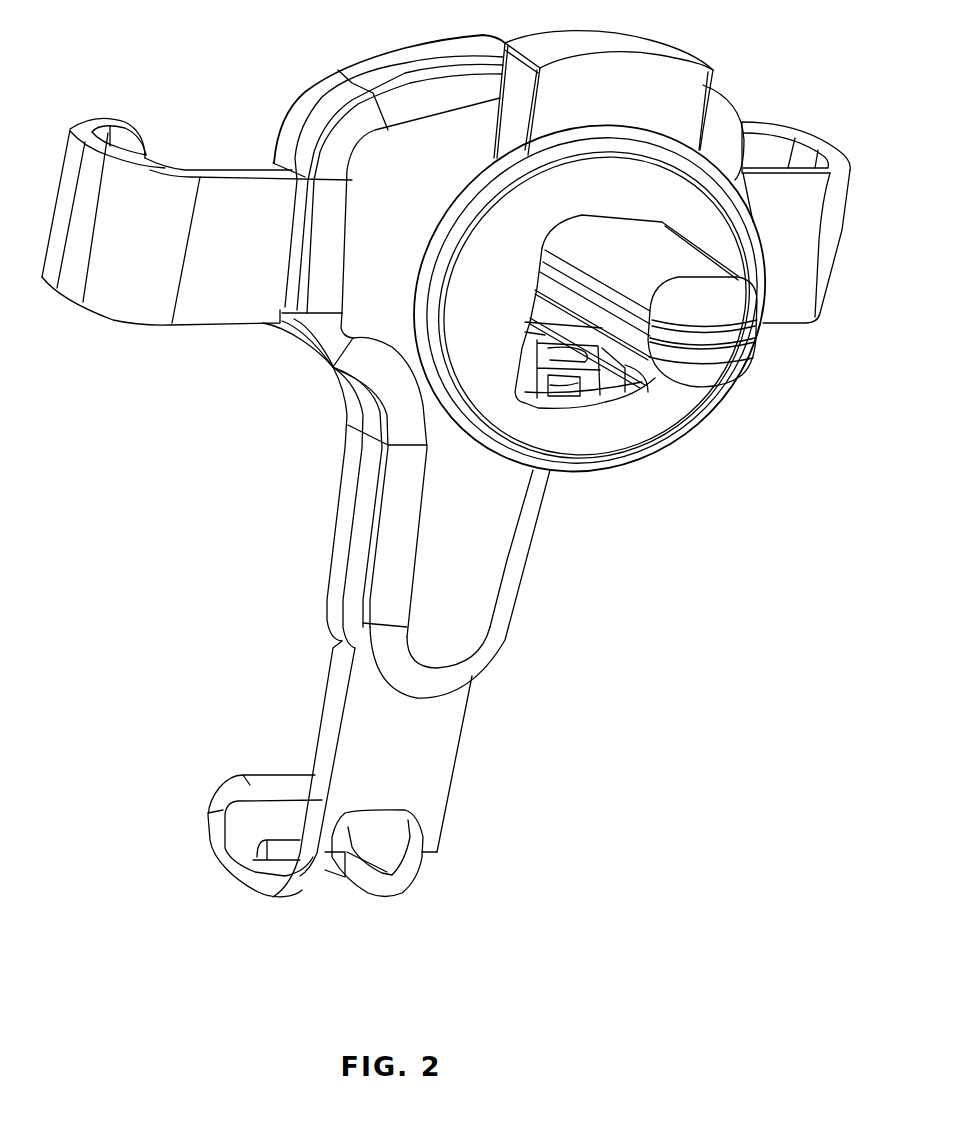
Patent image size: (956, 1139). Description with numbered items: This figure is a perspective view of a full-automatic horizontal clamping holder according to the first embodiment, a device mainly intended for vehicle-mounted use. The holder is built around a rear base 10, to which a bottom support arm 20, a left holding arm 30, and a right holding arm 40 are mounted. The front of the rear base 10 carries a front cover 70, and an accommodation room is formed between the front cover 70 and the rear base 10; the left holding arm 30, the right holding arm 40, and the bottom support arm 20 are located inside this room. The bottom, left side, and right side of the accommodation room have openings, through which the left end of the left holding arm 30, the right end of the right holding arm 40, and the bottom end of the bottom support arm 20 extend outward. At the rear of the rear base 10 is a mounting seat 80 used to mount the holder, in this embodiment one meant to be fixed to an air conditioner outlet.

The rear base 10 is at (397, 560).
The bottom support arm 20 is at (427, 780).
The left holding arm 30 is at (782, 300).
The right holding arm 40 is at (207, 308).
The front cover 70 is at (335, 518).
The mounting seat 80 is at (660, 383).